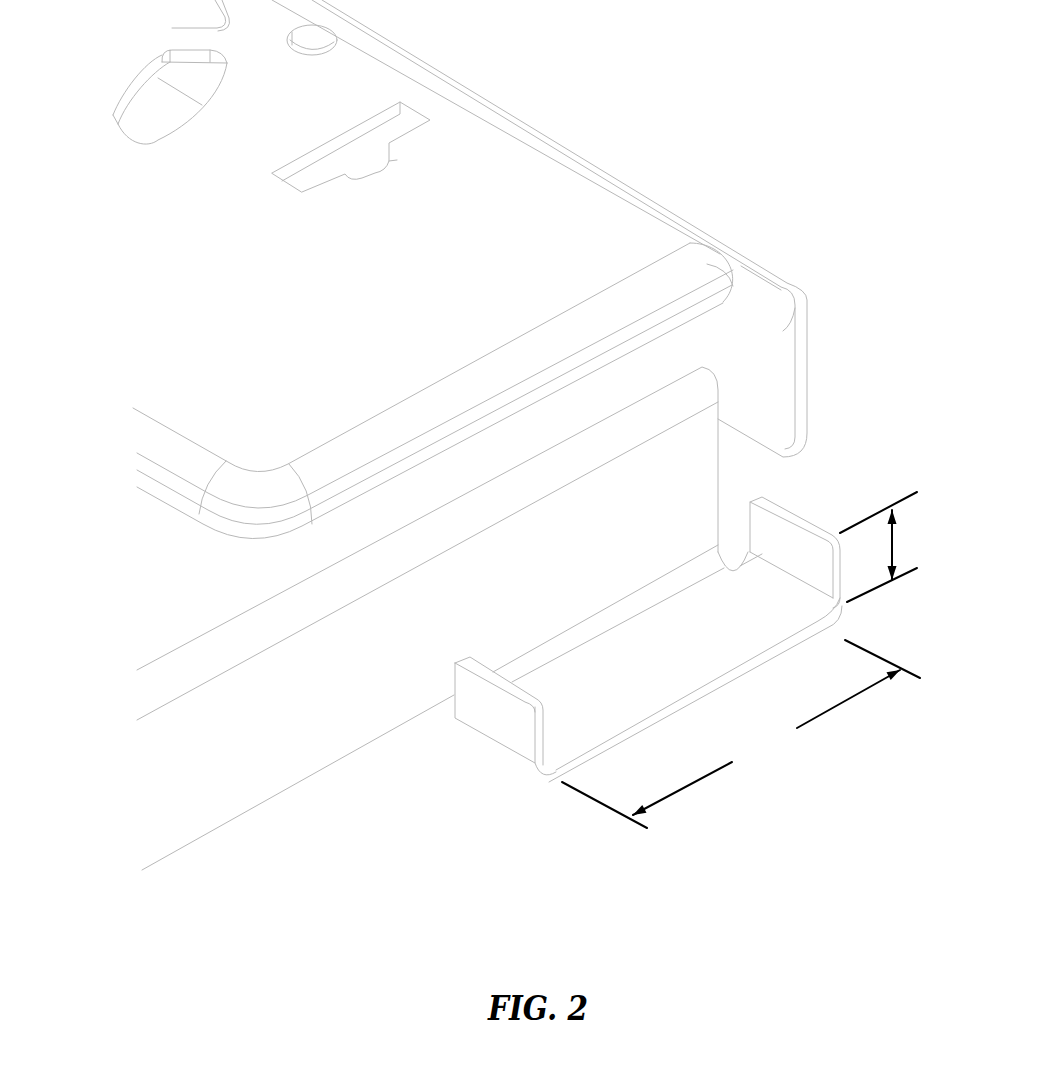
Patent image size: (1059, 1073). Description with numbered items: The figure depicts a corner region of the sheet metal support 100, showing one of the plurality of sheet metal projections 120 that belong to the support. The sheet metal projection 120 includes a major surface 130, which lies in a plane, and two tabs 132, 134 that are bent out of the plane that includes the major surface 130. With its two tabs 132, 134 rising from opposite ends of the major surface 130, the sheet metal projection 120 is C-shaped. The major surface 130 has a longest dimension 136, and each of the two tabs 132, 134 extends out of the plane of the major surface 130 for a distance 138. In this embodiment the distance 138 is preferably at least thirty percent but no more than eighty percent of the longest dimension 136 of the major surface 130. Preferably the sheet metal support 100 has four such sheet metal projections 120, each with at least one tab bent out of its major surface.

The sheet metal support 100 is at (483, 160).
The sheet metal projection 120 is at (522, 800).
The major surface 130 is at (673, 656).
The tab 132 is at (511, 736).
The tab 134 is at (807, 573).
The longest dimension 136 is at (741, 734).
The distance 138 is at (892, 547).